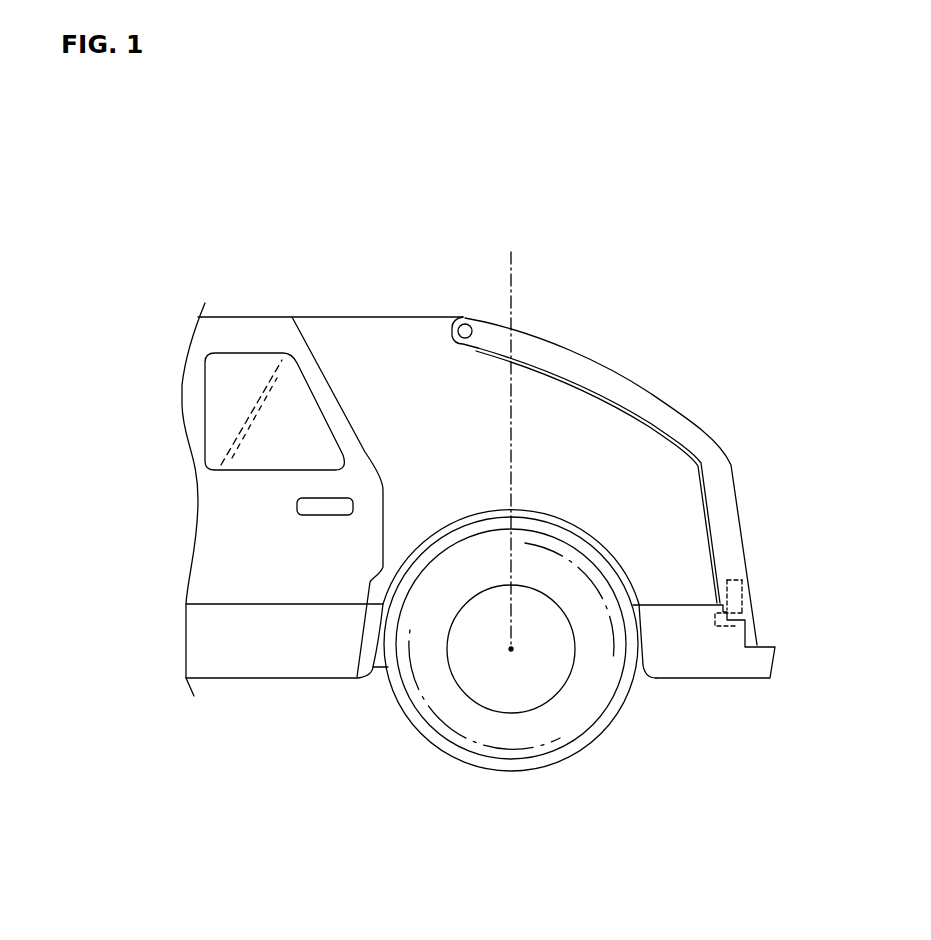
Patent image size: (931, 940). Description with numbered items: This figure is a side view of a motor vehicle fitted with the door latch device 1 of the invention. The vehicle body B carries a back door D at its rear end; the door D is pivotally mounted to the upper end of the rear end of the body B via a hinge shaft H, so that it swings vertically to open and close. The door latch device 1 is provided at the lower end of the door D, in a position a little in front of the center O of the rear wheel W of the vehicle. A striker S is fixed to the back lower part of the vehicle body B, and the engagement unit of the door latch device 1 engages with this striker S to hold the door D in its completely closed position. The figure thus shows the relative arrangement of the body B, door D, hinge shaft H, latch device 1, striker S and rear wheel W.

The vehicle body B is at (370, 316).
The hinge shaft H is at (445, 327).
The center of the rear wheel O is at (511, 439).
The back door D is at (663, 397).
The door latch device 1 is at (732, 575).
The striker S is at (715, 614).
The rear wheel W is at (533, 771).